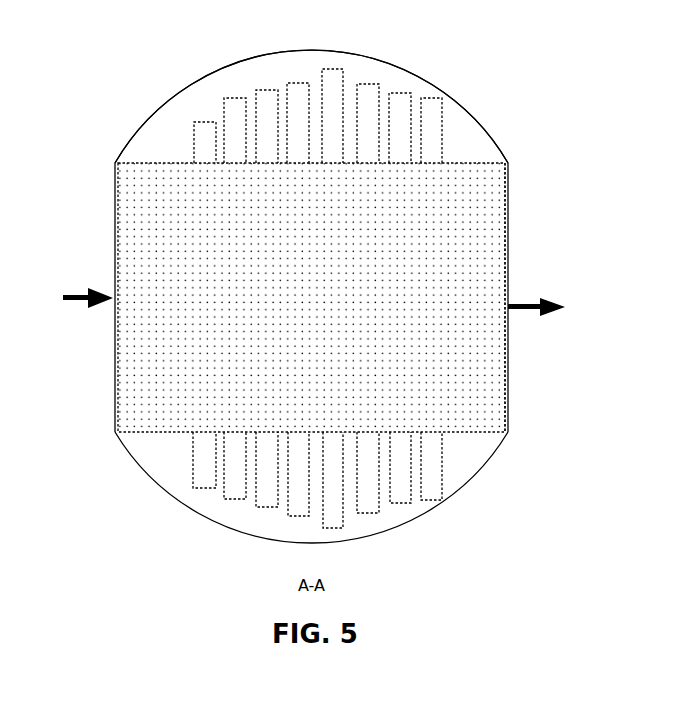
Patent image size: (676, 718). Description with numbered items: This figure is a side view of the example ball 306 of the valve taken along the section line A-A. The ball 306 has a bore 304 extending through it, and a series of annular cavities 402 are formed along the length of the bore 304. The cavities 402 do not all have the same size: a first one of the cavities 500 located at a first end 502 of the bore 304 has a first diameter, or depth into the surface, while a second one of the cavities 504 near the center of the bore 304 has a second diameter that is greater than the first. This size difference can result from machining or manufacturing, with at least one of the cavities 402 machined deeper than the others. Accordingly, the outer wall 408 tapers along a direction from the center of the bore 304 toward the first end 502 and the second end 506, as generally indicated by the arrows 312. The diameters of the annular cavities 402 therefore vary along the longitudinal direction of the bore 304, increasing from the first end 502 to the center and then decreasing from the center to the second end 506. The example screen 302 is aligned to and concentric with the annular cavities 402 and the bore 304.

The screen 302 is at (457, 432).
The bore 304 is at (150, 433).
The ball 306 is at (208, 73).
The arrows 312 is at (63, 297).
The annular cavities 402 is at (290, 516).
The outer wall 408 is at (257, 60).
The first cavity 500 is at (205, 122).
The first end 502 is at (115, 188).
The second cavity 504 is at (332, 69).
The second end 506 is at (508, 162).